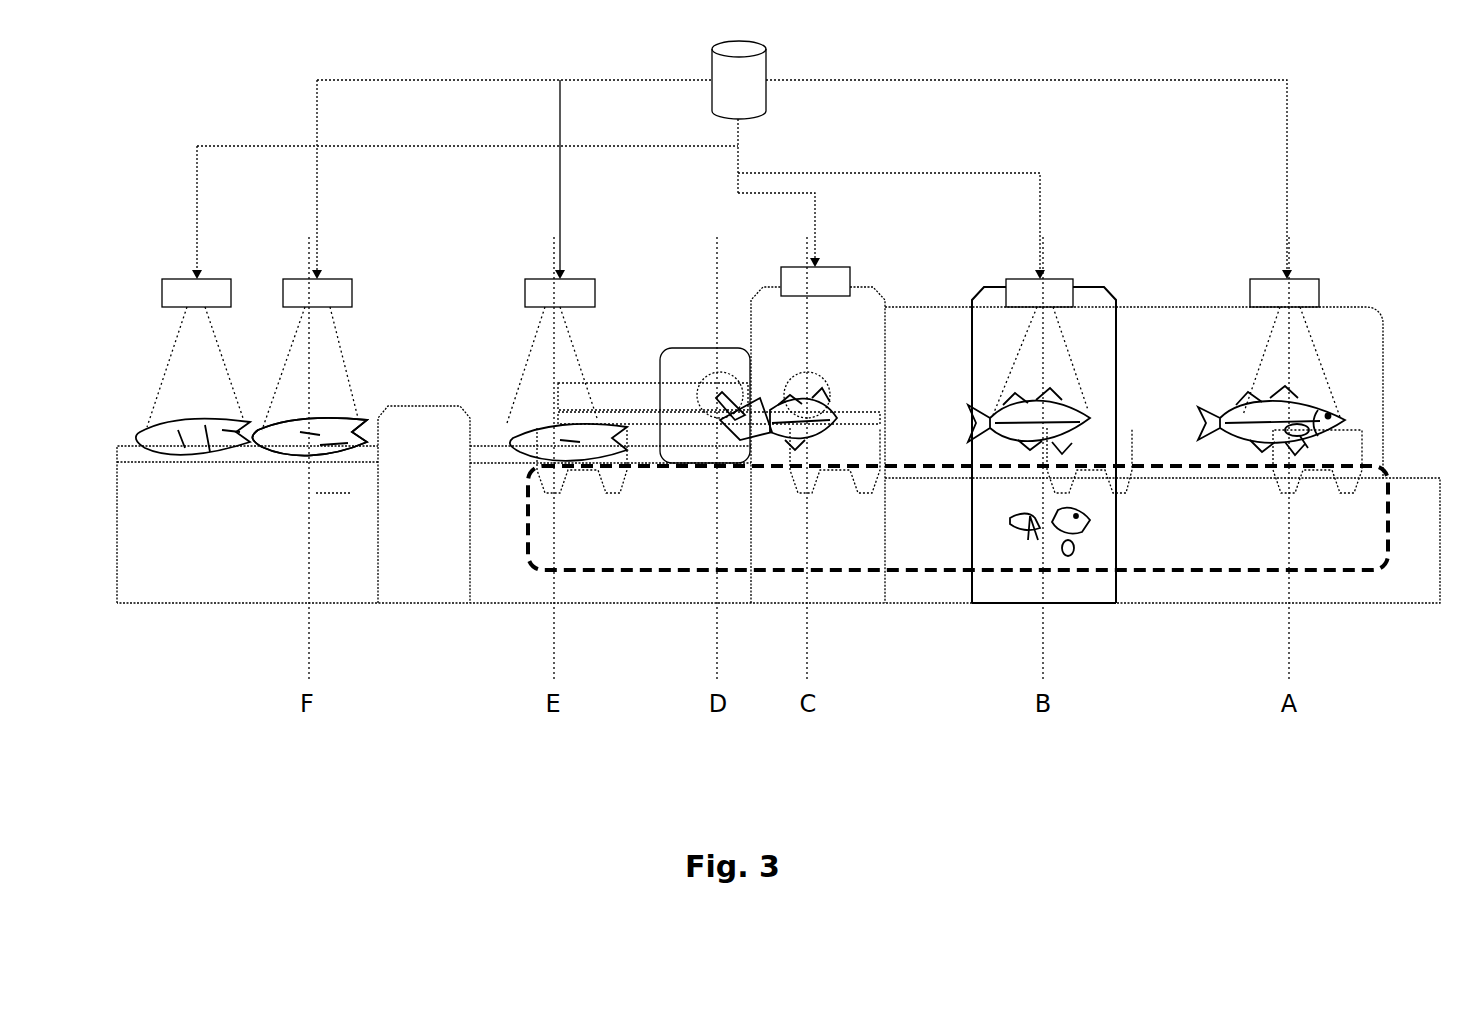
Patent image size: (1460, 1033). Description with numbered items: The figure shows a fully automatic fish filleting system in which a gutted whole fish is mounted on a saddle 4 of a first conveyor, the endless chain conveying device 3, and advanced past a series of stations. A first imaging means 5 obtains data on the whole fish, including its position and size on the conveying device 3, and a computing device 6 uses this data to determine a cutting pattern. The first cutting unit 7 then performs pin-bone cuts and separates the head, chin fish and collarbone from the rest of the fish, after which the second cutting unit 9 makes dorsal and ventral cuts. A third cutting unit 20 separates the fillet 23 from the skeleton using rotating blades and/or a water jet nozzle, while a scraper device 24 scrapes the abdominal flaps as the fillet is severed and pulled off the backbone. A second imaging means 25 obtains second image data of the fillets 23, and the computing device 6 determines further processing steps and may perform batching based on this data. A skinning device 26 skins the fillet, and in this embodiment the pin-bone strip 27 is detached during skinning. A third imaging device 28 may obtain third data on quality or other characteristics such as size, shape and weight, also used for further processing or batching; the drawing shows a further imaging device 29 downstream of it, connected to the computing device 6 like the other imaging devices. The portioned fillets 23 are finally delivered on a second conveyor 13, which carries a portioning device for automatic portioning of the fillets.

The conveying device 3 is at (1387, 470).
The saddle 4 is at (1356, 430).
The first imaging means 5 is at (1291, 348).
The computing device 6 is at (739, 80).
The first cutting unit 7 is at (1040, 347).
The second cutting unit 9 is at (815, 281).
The second conveyor 13 is at (158, 460).
The third cutting unit 20 is at (664, 346).
The fillet 23 is at (318, 452).
The scraper device 24 is at (681, 432).
The second imaging means 25 is at (552, 351).
The skinning device 26 is at (424, 504).
The pin-bone strip 27 is at (338, 494).
The third imaging device 28 is at (310, 354).
The camera 29 is at (195, 353).